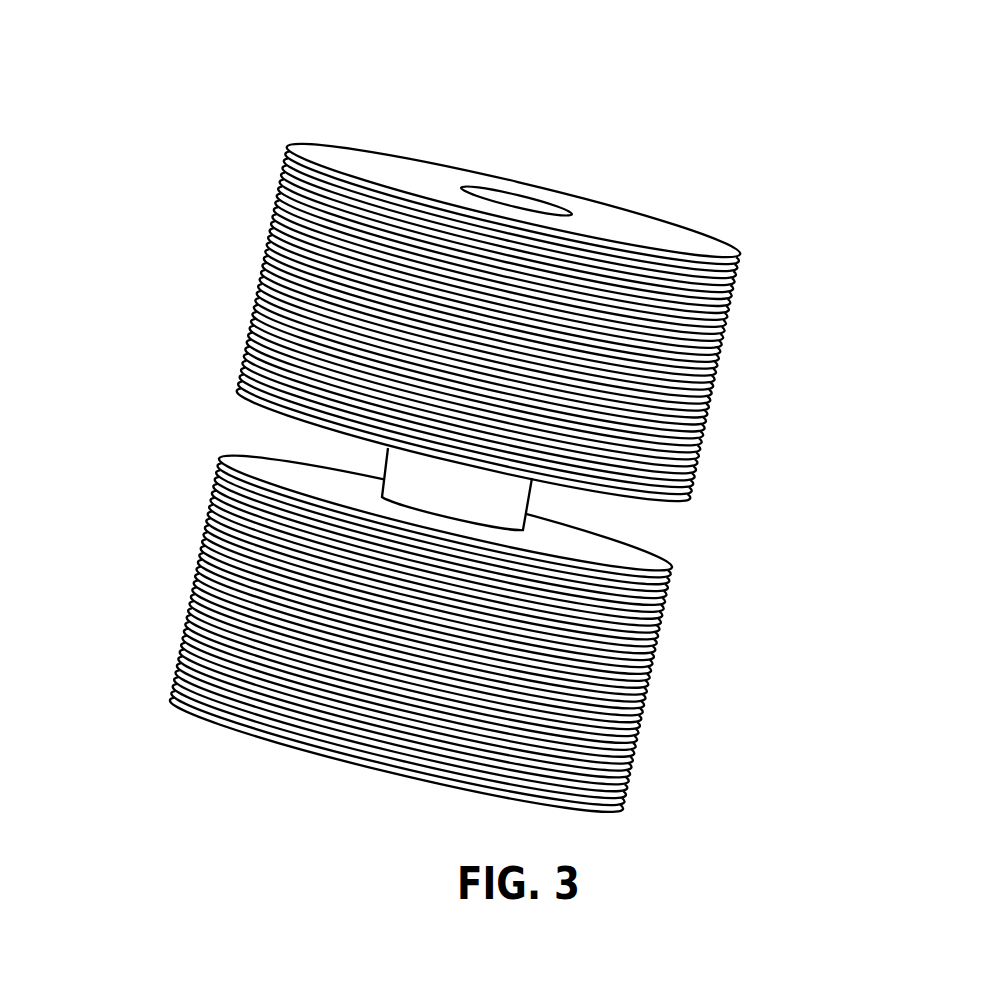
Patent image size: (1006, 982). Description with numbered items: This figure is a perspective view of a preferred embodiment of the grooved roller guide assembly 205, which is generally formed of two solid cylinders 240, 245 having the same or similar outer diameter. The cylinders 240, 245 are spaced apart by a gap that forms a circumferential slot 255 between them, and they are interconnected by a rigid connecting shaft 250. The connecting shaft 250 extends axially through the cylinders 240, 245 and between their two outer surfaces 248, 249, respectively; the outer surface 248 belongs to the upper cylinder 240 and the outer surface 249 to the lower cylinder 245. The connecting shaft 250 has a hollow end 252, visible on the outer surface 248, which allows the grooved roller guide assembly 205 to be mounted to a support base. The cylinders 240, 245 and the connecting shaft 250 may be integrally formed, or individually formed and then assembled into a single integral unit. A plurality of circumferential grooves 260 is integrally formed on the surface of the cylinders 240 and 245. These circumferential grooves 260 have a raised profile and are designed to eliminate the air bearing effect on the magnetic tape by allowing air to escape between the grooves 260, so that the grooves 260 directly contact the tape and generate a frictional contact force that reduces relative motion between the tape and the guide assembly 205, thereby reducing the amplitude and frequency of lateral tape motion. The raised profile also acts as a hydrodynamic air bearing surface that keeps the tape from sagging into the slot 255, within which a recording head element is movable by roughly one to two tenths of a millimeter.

The grooved roller guide assembly 205 is at (505, 58).
The solid cylinder 240 is at (605, 286).
The solid cylinder 245 is at (494, 599).
The outer surface 248 is at (647, 230).
The outer surface 249 is at (272, 742).
The connecting shaft 250 is at (532, 479).
The hollow end 252 is at (527, 210).
The circumferential slot 255 is at (664, 536).
The circumferential grooves 260 is at (660, 418).